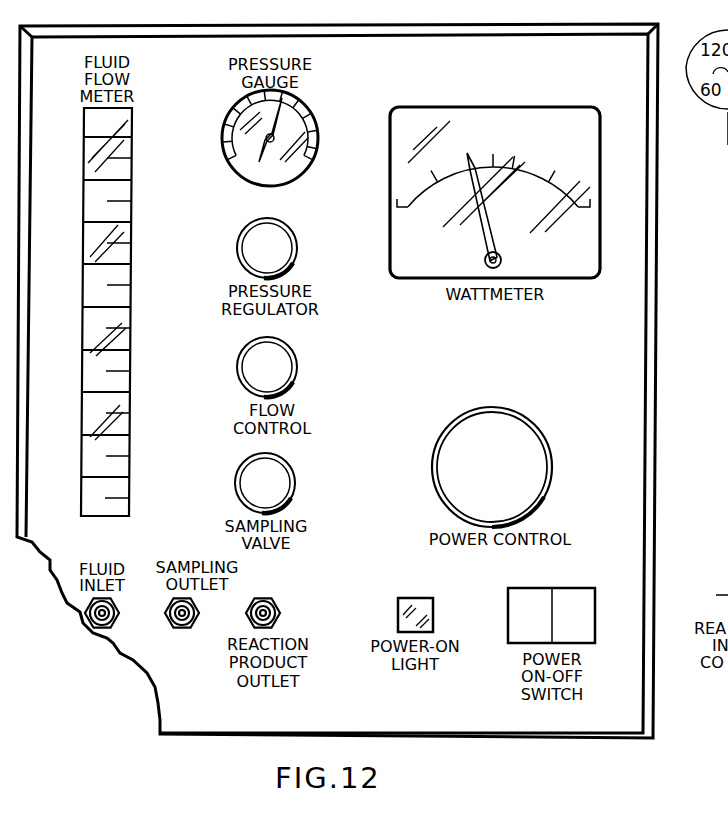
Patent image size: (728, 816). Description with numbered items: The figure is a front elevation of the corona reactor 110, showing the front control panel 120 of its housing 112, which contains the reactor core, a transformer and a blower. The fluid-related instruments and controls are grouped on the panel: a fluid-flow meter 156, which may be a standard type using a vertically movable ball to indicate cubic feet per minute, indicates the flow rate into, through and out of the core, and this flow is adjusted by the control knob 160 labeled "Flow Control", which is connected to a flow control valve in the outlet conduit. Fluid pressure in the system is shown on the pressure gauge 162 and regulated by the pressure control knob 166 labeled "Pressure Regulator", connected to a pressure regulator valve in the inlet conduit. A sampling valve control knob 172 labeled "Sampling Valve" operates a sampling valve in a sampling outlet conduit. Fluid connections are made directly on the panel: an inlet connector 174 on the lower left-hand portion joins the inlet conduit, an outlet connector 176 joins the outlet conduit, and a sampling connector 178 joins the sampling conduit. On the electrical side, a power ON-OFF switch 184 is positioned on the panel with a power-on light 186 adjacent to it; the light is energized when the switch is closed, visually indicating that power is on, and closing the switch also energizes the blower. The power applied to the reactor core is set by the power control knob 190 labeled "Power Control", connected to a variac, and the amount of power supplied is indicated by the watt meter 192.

The corona reactor 110 is at (656, 351).
The housing 112 is at (647, 413).
The front control panel 120 is at (389, 366).
The fluid-flow meter 156 is at (122, 172).
The flow control knob 160 is at (286, 362).
The pressure gauge 162 is at (236, 172).
The pressure control knob 166 is at (288, 243).
The sampling valve control knob 172 is at (285, 477).
The inlet connector 174 is at (111, 627).
The outlet connector 176 is at (280, 614).
The sampling connector 178 is at (198, 614).
The power ON-OFF switch 184 is at (581, 598).
The power-on light 186 is at (426, 599).
The power control knob 190 is at (532, 443).
The watt meter 192 is at (513, 116).